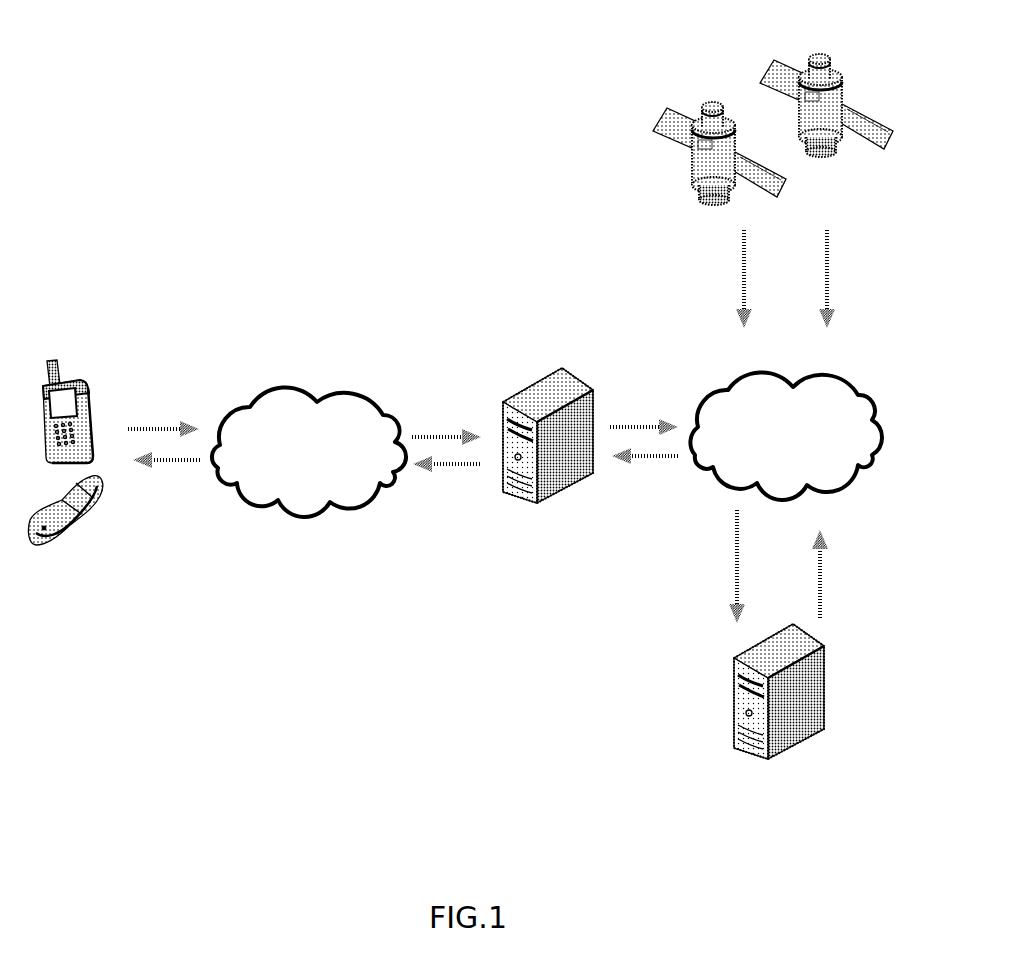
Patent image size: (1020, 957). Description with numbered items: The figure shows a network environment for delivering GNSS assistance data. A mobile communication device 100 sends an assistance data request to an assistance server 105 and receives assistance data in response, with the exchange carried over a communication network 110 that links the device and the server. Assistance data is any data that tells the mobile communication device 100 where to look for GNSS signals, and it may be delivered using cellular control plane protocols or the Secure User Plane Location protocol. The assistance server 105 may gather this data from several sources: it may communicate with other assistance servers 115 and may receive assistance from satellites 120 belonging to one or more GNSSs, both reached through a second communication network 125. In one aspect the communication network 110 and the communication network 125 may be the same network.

The mobile communication device 100 is at (100, 378).
The assistance server 105 is at (582, 373).
The communication network 110 is at (295, 463).
The other assistance servers 115 is at (730, 657).
The satellites 120 is at (712, 82).
The communication network 125 is at (773, 448).